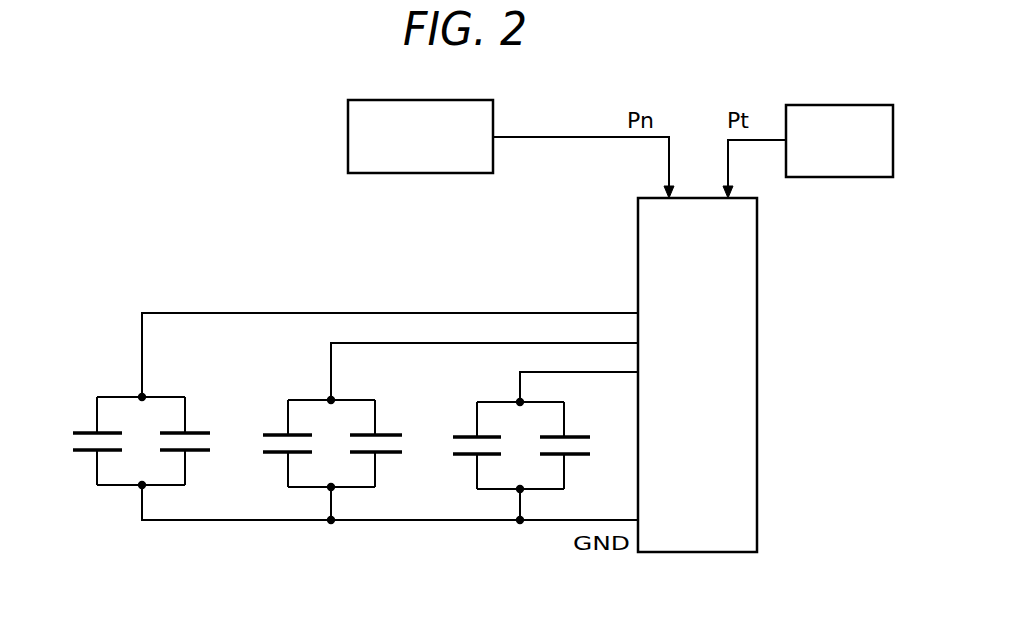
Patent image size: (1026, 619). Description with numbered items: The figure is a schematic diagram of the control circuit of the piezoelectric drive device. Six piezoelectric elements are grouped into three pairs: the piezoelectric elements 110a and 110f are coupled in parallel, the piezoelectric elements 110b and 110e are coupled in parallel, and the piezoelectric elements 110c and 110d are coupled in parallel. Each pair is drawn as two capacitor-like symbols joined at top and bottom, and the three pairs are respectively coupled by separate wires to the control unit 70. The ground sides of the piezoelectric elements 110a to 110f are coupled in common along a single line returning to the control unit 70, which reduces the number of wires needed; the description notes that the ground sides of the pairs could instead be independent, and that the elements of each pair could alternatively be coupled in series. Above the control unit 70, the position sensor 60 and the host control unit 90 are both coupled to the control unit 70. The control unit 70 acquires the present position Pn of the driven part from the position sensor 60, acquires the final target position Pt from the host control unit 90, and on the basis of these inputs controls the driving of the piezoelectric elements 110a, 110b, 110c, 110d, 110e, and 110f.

The position sensor 60 is at (468, 100).
The host control unit 90 is at (850, 105).
The control unit 70 is at (757, 230).
The piezoelectric element 110a is at (90, 430).
The piezoelectric element 110b is at (278, 432).
The piezoelectric element 110c is at (467, 433).
The piezoelectric element 110d is at (576, 433).
The piezoelectric element 110e is at (385, 432).
The piezoelectric element 110f is at (197, 430).